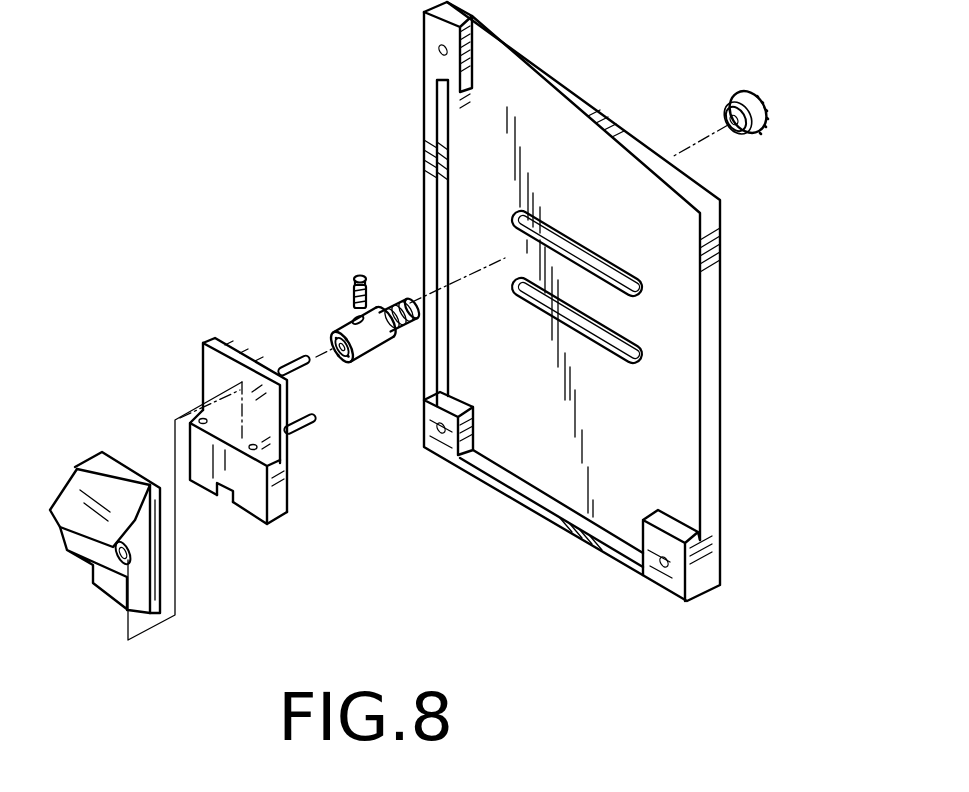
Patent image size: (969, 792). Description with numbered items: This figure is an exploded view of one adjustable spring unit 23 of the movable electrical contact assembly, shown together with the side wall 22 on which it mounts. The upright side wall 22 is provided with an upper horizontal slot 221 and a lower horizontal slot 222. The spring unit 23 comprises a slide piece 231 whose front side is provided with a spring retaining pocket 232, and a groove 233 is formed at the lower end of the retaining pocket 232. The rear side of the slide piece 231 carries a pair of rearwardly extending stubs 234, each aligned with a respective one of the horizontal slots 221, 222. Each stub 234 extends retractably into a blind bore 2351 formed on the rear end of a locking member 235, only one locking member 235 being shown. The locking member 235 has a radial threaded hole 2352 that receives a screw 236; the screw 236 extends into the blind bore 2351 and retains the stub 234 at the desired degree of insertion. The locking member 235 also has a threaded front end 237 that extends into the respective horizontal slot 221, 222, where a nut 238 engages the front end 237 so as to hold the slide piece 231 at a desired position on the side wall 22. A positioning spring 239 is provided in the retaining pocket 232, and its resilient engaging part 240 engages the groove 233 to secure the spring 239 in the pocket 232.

The side wall 22 is at (721, 191).
The upper horizontal slot 221 is at (641, 290).
The lower horizontal slot 222 is at (643, 358).
The nut 238 is at (728, 102).
The adjustable spring unit 23 is at (152, 376).
The positioning spring 239 is at (118, 458).
The resilient engaging part 240 is at (143, 560).
The slide piece 231 is at (289, 496).
The spring retaining pocket 232 is at (288, 513).
The groove 233 is at (227, 493).
The rearwardly extending stub 234 is at (312, 426).
The locking member 235 is at (338, 326).
The blind bore 2351 is at (333, 340).
The radial threaded hole 2352 is at (355, 318).
The screw 236 is at (357, 276).
The threaded front end 237 is at (393, 304).